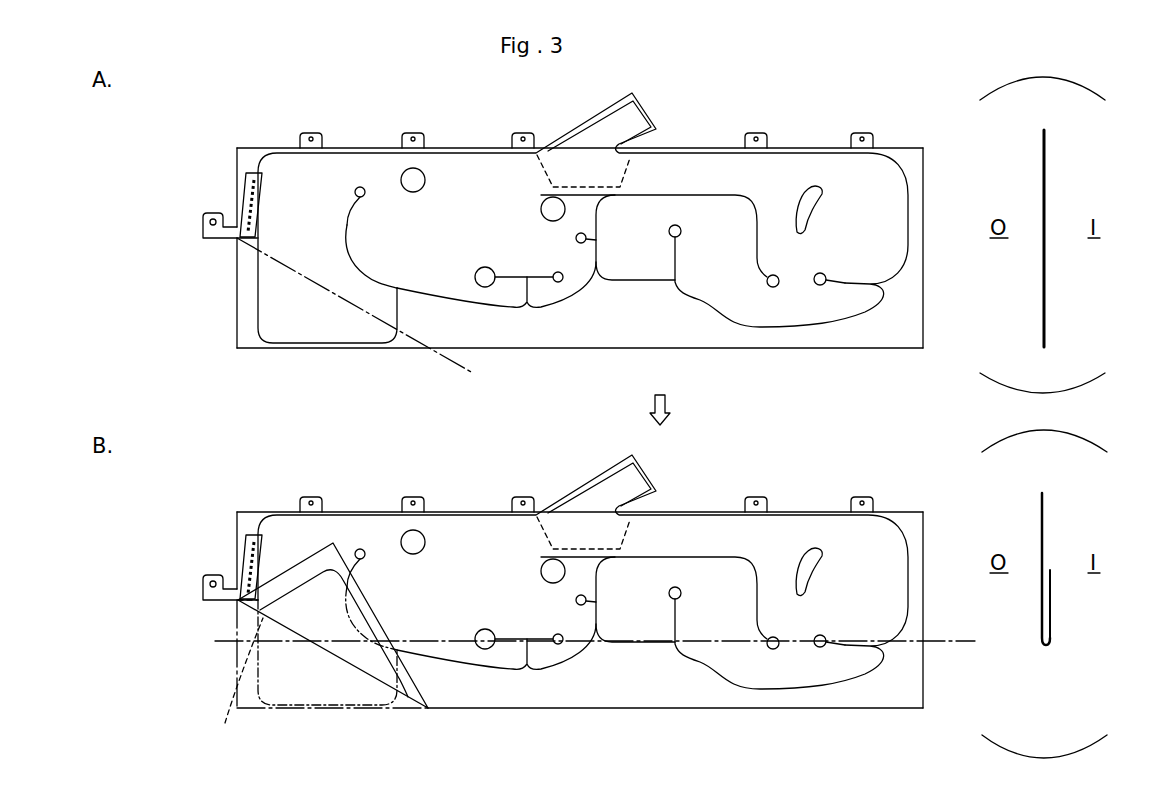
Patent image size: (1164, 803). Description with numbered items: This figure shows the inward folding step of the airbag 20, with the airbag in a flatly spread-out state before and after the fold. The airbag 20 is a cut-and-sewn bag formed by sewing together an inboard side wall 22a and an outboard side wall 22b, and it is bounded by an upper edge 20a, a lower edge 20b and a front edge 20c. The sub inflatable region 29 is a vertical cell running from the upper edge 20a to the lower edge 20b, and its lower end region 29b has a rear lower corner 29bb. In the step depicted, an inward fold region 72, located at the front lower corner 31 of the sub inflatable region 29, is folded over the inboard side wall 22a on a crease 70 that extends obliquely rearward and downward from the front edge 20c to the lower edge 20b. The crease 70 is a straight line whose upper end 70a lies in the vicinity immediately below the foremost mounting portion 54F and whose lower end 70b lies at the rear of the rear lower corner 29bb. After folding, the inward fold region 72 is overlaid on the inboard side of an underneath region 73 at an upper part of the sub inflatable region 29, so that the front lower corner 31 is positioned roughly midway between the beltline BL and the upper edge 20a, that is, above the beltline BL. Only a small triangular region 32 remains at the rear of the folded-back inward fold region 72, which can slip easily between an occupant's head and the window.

The airbag 20 is at (902, 112).
The upper edge 20a is at (292, 515).
The lower edge 20b is at (530, 349).
The front edge 20c is at (242, 187).
The inboard side wall 22a is at (1057, 312).
The outboard side wall 22b is at (1027, 305).
The sub inflatable region 29 is at (297, 180).
The lower end region 29b is at (318, 334).
The rear lower corner 29bb is at (392, 332).
The front lower corner 31 is at (263, 332).
The triangular region 32 is at (408, 685).
The foremost mounting portion 54F is at (227, 233).
The crease 70 is at (357, 306).
The upper end of the crease 70a is at (235, 240).
The lower end of the crease 70b is at (427, 350).
The inward fold region 72 is at (318, 607).
The underneath region 73 is at (236, 685).
The beltline BL is at (227, 641).